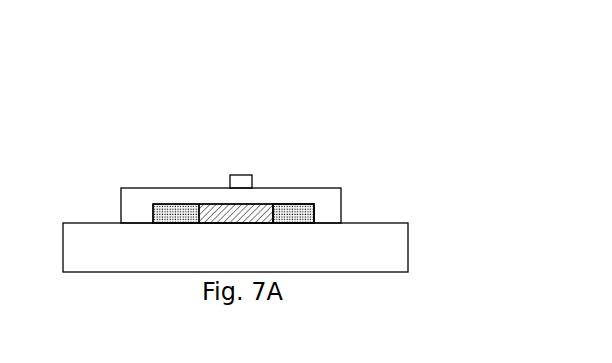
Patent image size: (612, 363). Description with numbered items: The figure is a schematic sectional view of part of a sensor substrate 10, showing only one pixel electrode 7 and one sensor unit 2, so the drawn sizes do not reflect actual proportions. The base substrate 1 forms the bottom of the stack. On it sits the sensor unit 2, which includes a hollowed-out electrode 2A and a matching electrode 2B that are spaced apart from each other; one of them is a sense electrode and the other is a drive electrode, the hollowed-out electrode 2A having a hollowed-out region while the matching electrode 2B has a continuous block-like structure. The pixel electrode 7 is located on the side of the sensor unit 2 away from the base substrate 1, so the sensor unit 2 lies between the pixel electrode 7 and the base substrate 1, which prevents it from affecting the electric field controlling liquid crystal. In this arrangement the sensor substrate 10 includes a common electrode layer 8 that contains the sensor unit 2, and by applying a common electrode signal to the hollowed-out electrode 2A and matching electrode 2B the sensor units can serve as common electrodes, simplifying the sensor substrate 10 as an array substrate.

The base substrate 1 is at (382, 245).
The sensor unit 2 is at (73, 120).
The hollowed-out electrode 2A is at (163, 210).
The matching electrode 2B is at (208, 205).
The pixel electrode 7 is at (254, 174).
The common electrode layer 8 is at (318, 214).
The sensor substrate 10 is at (421, 121).